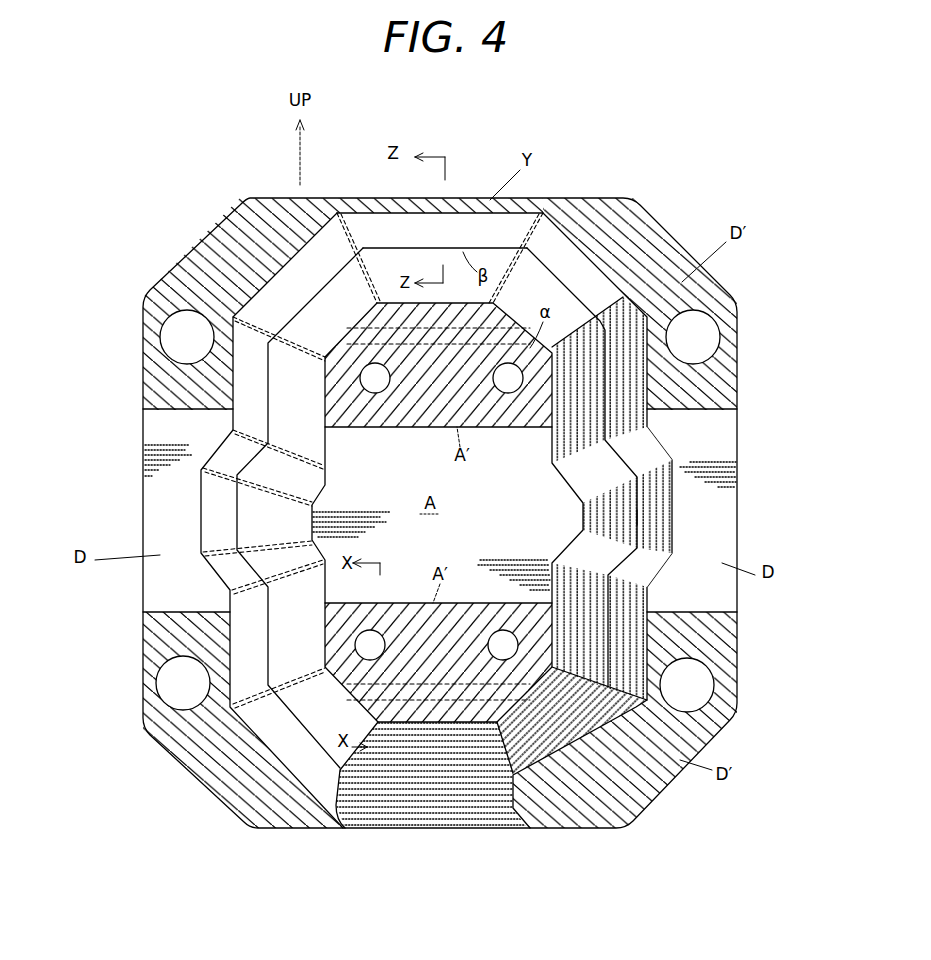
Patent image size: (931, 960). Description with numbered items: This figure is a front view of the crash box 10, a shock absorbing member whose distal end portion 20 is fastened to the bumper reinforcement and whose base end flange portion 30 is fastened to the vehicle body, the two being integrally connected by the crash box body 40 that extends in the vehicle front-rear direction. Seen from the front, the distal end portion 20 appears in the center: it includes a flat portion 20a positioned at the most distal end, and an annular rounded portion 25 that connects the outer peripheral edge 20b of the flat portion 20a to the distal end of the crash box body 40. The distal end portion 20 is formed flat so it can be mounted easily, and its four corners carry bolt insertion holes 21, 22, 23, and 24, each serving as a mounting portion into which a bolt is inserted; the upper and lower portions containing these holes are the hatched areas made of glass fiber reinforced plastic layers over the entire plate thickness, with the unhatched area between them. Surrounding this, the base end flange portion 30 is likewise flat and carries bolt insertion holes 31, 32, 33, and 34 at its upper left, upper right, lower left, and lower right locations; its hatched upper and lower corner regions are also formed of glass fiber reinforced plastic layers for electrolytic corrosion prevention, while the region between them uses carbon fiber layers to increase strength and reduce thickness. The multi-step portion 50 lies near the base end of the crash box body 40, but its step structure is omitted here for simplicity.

The crash box 10 is at (132, 240).
The distal end portion 20 is at (291, 510).
The flat portion 20a is at (487, 507).
The outer peripheral edge 20b is at (330, 421).
The bolt insertion hole 21 is at (383, 428).
The bolt insertion hole 22 is at (531, 430).
The bolt insertion hole 23 is at (352, 648).
The bolt insertion hole 24 is at (520, 645).
The rounded portion 25 is at (372, 328).
The base end flange portion 30 is at (740, 419).
The bolt insertion hole 31 is at (160, 338).
The bolt insertion hole 32 is at (720, 338).
The bolt insertion hole 33 is at (156, 684).
The bolt insertion hole 34 is at (714, 685).
The crash box body 40 is at (715, 525).
The multi-step portion 50 is at (557, 253).